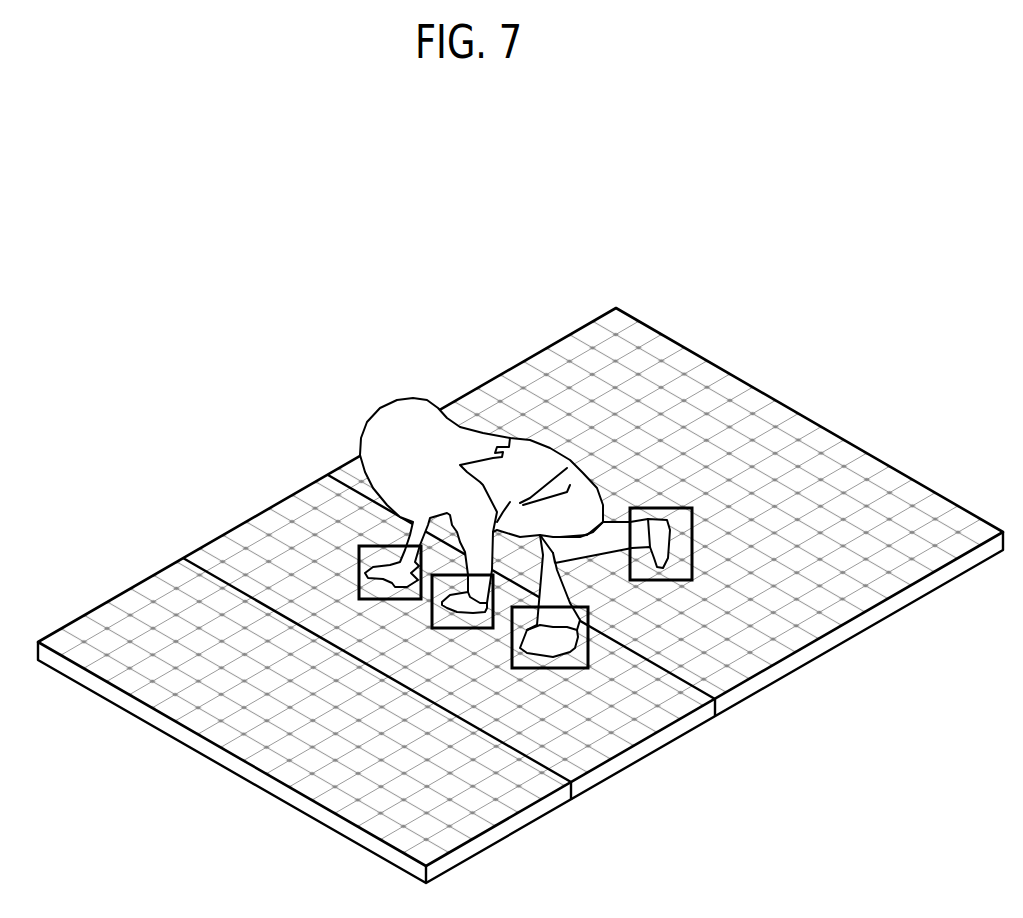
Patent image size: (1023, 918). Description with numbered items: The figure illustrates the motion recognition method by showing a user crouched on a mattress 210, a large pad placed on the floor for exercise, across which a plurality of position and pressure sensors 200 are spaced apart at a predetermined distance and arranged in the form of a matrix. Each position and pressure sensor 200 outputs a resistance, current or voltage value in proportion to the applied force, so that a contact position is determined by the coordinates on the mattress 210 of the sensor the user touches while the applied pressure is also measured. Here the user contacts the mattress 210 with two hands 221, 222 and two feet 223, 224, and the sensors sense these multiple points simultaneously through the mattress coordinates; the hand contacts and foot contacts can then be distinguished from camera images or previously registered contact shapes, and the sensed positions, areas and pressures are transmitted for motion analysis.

The mattress 210 is at (678, 335).
The position and pressure sensor 200 is at (862, 480).
The hand 221 is at (360, 585).
The hand 222 is at (453, 628).
The foot 223 is at (583, 668).
The foot 224 is at (692, 527).